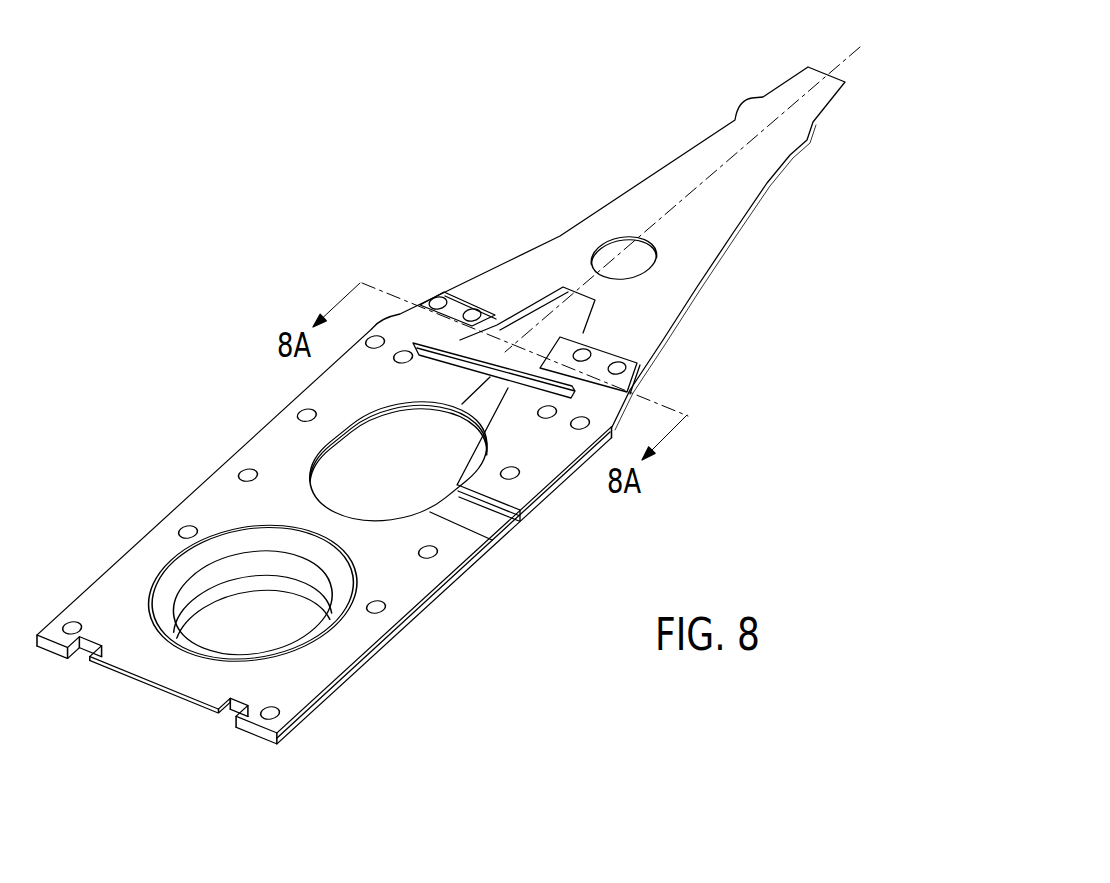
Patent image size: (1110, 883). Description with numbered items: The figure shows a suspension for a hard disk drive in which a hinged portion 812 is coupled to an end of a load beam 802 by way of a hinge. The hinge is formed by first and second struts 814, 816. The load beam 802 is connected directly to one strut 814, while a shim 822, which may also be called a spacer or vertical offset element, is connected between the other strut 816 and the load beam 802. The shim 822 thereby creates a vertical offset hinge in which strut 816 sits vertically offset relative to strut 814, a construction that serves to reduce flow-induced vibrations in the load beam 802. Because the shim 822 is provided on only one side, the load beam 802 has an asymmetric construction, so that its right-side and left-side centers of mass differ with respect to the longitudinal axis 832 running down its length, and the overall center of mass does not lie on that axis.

The load beam 802 is at (660, 305).
The hinged portion 812 is at (257, 460).
The first strut 814 is at (437, 295).
The second strut 816 is at (627, 358).
The shim 822 is at (550, 381).
The longitudinal axis 832 is at (845, 60).